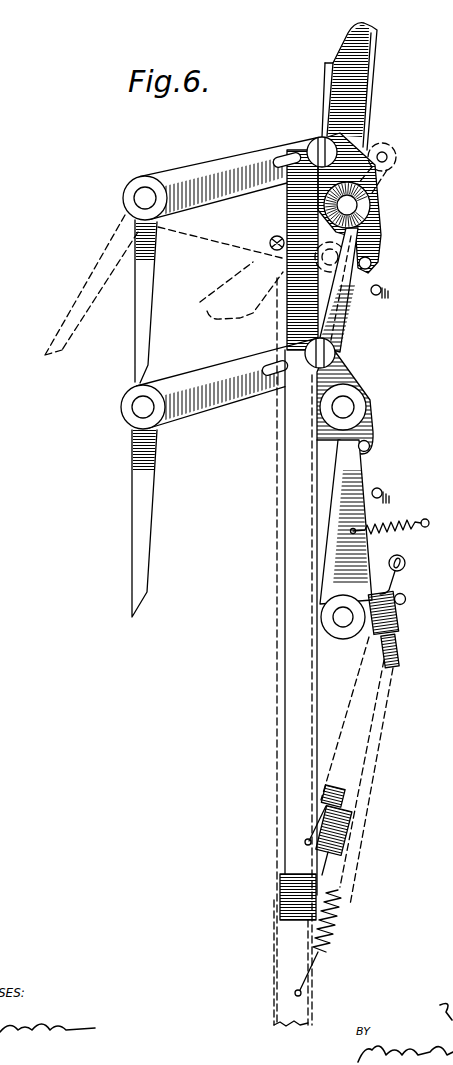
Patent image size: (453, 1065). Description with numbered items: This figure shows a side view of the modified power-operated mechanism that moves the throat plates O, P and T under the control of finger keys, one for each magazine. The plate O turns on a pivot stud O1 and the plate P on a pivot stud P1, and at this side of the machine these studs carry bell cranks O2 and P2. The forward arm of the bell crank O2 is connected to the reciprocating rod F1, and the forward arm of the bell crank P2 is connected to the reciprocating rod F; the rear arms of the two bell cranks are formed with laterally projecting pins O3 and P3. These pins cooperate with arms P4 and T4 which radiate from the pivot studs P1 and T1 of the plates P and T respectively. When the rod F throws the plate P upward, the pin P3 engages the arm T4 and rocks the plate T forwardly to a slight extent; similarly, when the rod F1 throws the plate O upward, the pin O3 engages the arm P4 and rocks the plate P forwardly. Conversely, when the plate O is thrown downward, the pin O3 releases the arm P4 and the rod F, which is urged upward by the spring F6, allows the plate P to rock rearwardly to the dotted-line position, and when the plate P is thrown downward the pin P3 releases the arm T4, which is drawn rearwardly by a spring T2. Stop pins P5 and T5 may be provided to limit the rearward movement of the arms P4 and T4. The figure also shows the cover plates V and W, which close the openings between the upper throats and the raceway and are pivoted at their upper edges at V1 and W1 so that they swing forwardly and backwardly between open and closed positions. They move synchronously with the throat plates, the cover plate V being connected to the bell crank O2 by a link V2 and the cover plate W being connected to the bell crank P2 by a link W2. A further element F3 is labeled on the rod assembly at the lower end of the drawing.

The plate O is at (367, 100).
The pivot stud O1 is at (348, 206).
The bell crank O2 is at (374, 228).
The laterally projecting pin O3 is at (370, 261).
The stop pin P5 is at (380, 290).
The arm P4 is at (352, 336).
The bell crank P2 is at (337, 373).
The pivot stud P1 is at (343, 407).
The laterally projecting pin P3 is at (366, 443).
The stop pin T5 is at (378, 490).
The arm T4 is at (360, 520).
The spring T2 is at (403, 537).
The pivot stud T1 is at (345, 620).
The reciprocating rod F is at (296, 514).
The reciprocating rod F1 is at (293, 322).
The spring F6 is at (365, 798).
The bottom spring F3 is at (368, 936).
The cover plate V is at (135, 318).
The pivot V1 is at (143, 198).
The link V2 is at (251, 160).
The cover plate W is at (143, 473).
The pivot W1 is at (142, 406).
The link W2 is at (190, 372).